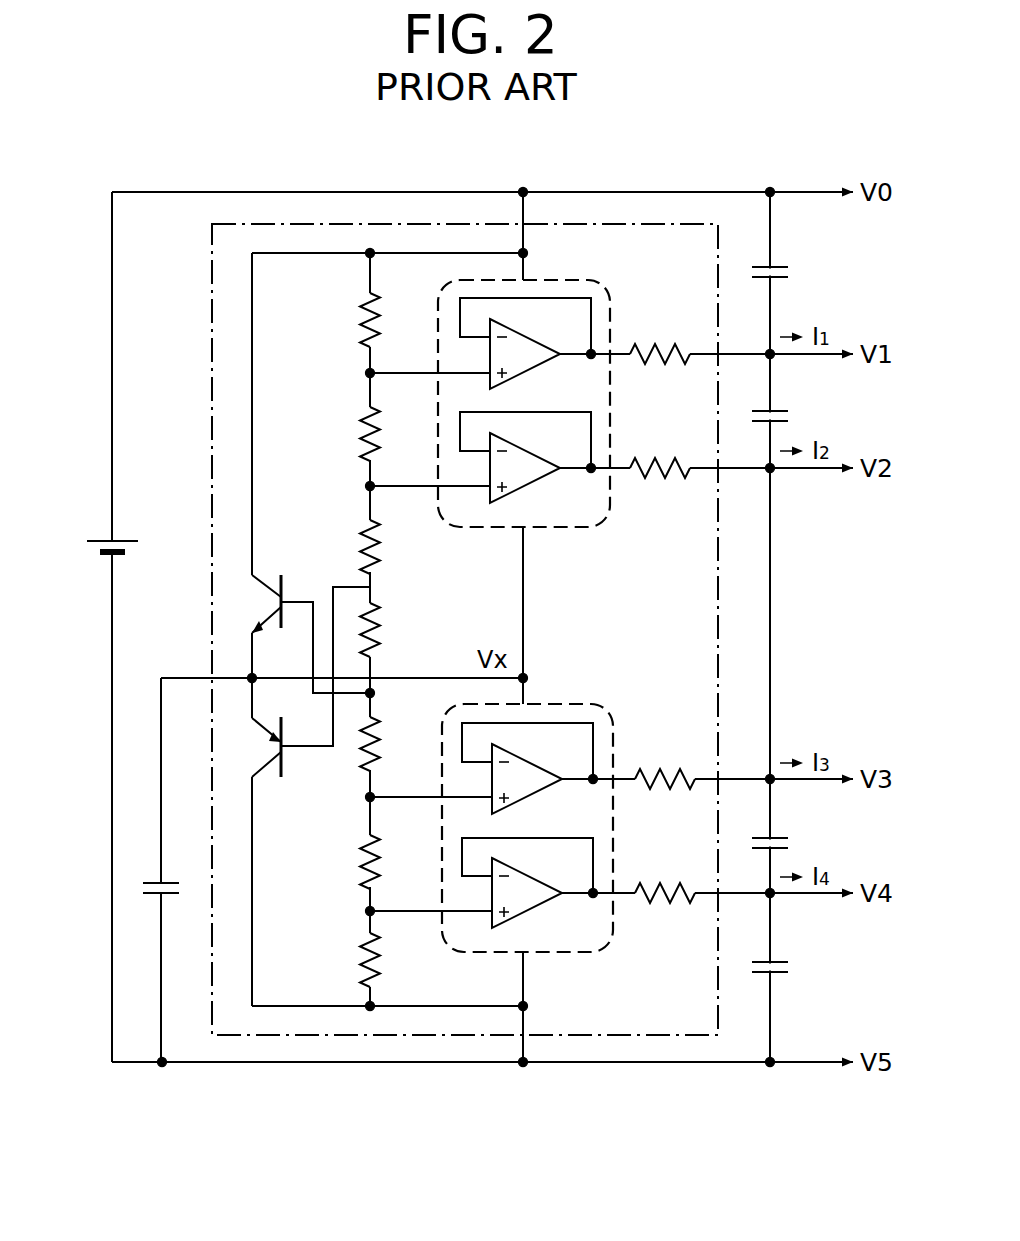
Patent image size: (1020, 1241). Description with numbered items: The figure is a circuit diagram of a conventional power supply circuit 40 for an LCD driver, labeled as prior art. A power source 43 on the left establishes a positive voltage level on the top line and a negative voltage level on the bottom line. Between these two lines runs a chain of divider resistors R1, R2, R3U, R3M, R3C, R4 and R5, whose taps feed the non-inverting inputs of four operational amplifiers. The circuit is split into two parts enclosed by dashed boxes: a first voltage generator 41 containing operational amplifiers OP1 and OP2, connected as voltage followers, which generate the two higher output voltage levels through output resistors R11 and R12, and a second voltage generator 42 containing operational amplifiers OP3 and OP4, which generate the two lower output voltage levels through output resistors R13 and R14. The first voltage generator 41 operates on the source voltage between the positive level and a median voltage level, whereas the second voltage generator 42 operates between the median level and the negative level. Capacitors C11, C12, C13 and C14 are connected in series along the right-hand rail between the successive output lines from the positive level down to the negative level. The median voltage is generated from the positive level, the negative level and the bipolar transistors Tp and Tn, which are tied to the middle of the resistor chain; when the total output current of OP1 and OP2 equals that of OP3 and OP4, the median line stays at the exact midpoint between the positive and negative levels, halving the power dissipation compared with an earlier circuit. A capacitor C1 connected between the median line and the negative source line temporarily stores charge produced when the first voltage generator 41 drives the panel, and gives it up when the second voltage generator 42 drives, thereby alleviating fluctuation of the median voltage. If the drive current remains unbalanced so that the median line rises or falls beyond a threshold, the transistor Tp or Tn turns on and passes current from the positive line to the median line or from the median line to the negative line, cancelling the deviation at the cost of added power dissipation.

The power supply circuit 40 is at (895, 136).
The first voltage generator 41 is at (606, 285).
The second voltage generator 42 is at (608, 711).
The power source 43 is at (107, 541).
The resistor R1 is at (386, 320).
The resistor R2 is at (386, 434).
The resistor R3U is at (392, 547).
The resistor R3M is at (393, 630).
The resistor R3C is at (392, 744).
The resistor R4 is at (386, 862).
The resistor R5 is at (386, 960).
The output resistor R11 is at (741, 341).
The output resistor R12 is at (741, 455).
The output resistor R13 is at (744, 766).
The output resistor R14 is at (744, 880).
The operational amplifier OP1 is at (545, 343).
The operational amplifier OP2 is at (545, 457).
The operational amplifier OP3 is at (548, 768).
The operational amplifier OP4 is at (548, 883).
The bipolar transistor Tn is at (311, 619).
The bipolar transistor Tp is at (311, 697).
The capacitor C1 is at (153, 870).
The capacitor C11 is at (784, 273).
The capacitor C12 is at (784, 401).
The capacitor C13 is at (784, 828).
The capacitor C14 is at (784, 952).